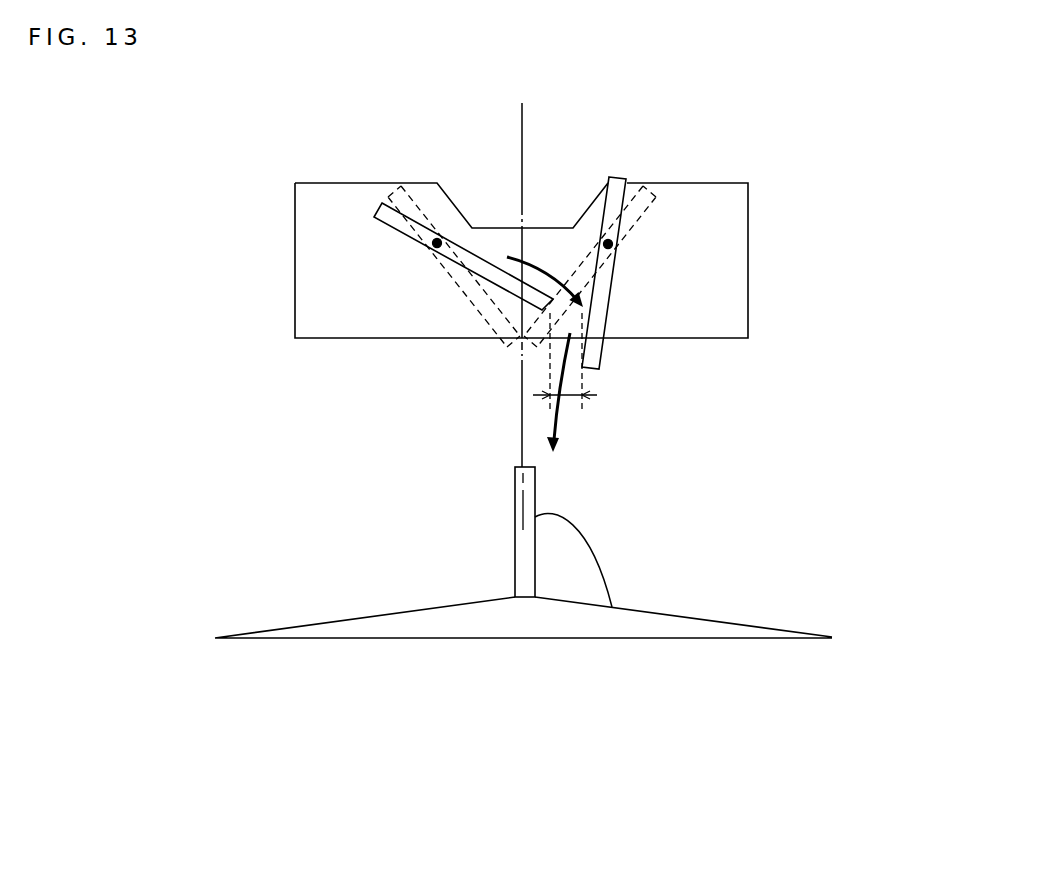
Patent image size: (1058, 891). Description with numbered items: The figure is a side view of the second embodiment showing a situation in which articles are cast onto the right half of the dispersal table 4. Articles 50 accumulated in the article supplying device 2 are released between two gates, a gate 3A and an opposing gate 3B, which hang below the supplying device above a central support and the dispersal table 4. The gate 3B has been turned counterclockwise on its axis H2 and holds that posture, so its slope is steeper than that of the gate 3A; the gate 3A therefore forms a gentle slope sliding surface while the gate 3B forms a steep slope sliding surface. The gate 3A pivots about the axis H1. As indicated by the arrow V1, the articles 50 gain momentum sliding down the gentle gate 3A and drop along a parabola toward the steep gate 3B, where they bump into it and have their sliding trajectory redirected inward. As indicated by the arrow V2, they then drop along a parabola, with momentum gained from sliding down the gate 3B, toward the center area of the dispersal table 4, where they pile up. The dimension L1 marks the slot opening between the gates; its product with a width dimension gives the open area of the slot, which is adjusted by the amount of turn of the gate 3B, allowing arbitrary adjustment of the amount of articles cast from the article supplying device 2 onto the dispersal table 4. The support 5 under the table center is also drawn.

The article supplying device 2 is at (740, 213).
The gate 3A is at (483, 272).
The gate 3B is at (603, 283).
The dispersal table 4 is at (595, 617).
The rod 5 is at (525, 550).
The articles 50 is at (570, 548).
The first pivot axis H1 is at (437, 243).
The axis H2 is at (608, 244).
The arrow V1 is at (555, 270).
The arrow V2 is at (556, 423).
The dimension L1 is at (572, 400).